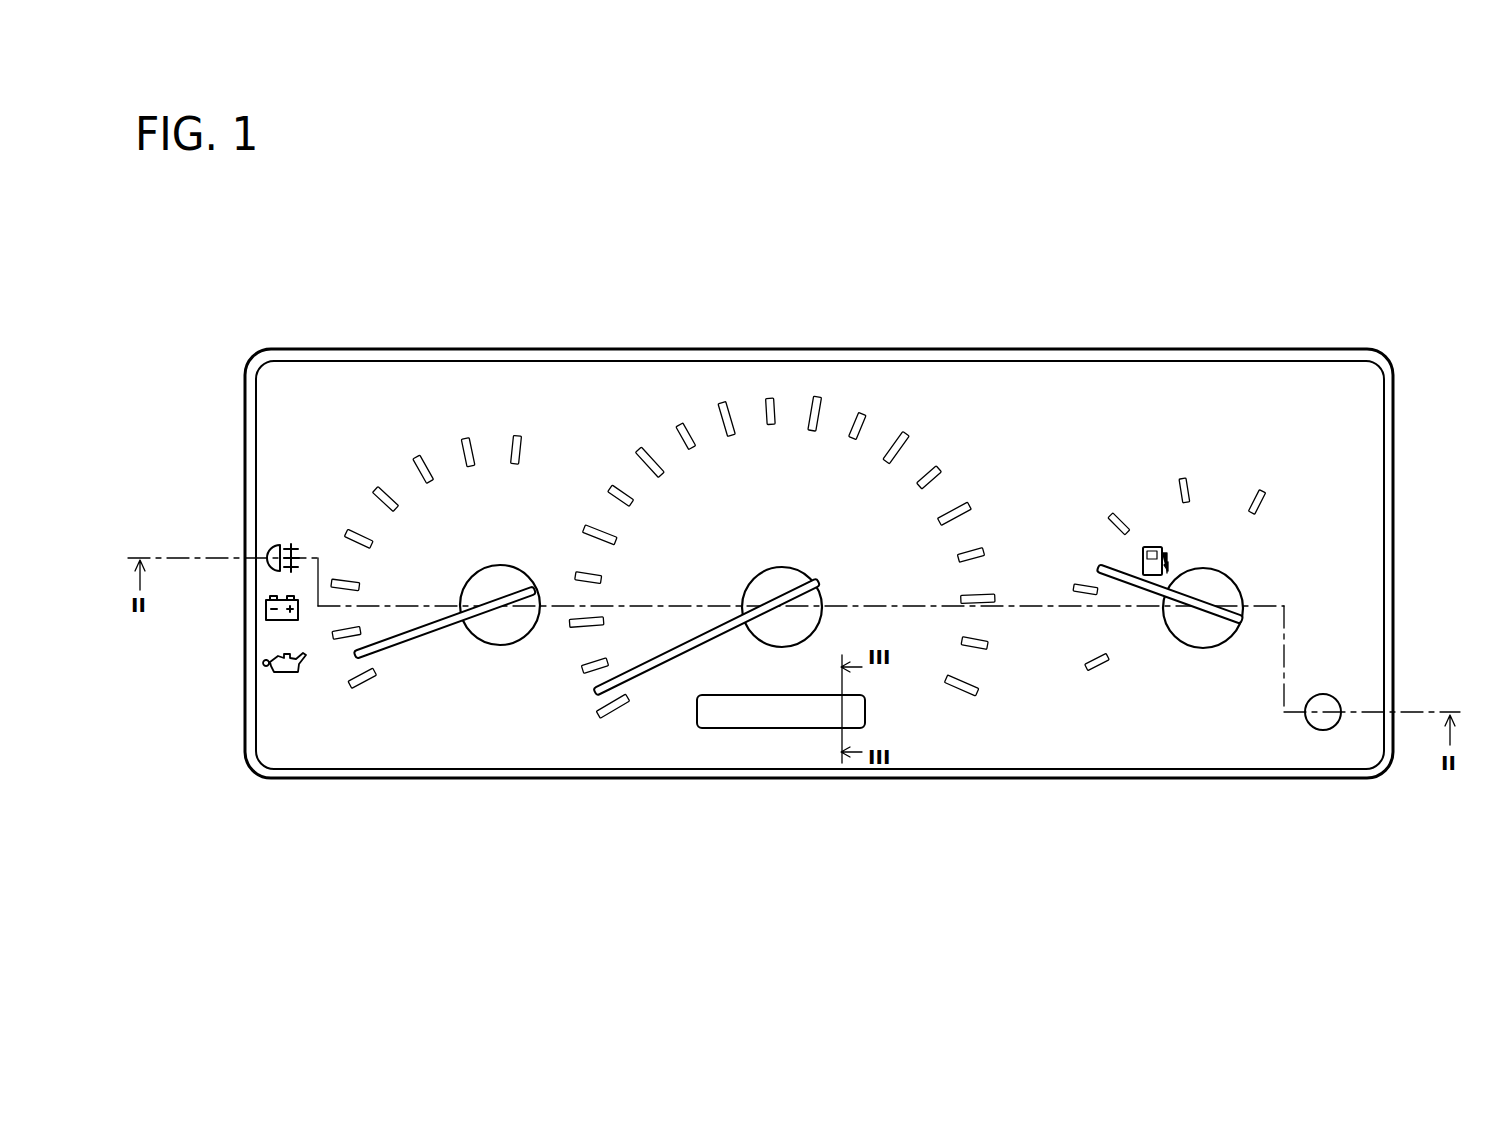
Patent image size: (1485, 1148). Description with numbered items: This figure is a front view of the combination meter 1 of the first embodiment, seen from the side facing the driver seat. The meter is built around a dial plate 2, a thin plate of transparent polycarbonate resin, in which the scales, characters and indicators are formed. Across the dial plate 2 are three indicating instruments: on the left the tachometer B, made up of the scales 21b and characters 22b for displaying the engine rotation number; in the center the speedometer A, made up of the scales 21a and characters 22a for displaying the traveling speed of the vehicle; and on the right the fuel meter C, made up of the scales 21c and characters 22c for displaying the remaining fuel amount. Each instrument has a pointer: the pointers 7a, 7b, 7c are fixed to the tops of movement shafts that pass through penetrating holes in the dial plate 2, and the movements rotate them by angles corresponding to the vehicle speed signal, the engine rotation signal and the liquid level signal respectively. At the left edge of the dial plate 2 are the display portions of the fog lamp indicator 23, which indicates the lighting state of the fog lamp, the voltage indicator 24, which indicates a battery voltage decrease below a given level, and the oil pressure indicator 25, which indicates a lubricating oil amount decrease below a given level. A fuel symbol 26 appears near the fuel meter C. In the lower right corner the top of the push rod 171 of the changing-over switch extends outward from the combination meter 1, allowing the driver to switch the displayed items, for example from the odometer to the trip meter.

The combination meter 1 is at (203, 233).
The dial plate 2 is at (312, 412).
The speedometer A is at (782, 483).
The tachometer B is at (440, 568).
The fuel meter C is at (1188, 464).
The pointer 7a is at (690, 665).
The pointer 7b is at (420, 643).
The pointer 7c is at (1125, 588).
The scales 21a is at (775, 405).
The scales 21b is at (421, 462).
The scales 21c is at (1258, 492).
The characters 22a is at (800, 428).
The characters 22b is at (438, 500).
The characters 22c is at (1273, 520).
The fog lamp indicator 23 is at (270, 545).
The voltage indicator 24 is at (283, 622).
The oil pressure indicator 25 is at (285, 680).
The fuel indicator symbol 26 is at (1153, 543).
The push rod 171 is at (1323, 730).